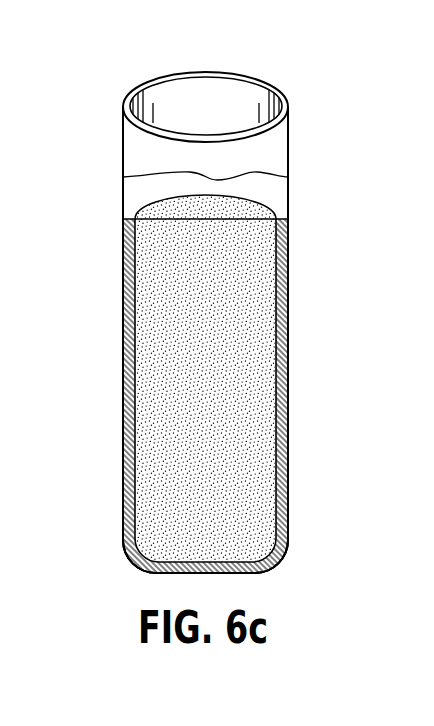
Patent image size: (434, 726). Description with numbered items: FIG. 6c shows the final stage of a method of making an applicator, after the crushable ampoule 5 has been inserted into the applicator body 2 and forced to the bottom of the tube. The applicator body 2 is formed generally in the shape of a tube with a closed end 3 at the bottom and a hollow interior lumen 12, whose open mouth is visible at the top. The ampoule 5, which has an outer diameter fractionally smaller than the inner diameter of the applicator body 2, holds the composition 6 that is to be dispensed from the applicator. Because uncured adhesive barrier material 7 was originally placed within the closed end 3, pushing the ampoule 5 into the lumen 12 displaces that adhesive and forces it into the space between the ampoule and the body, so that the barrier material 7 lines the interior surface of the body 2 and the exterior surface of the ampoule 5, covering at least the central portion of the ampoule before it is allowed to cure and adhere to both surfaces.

The applicator body 2 is at (278, 145).
The hollow interior lumen 12 is at (187, 87).
The barrier material 7 is at (128, 313).
The crushable ampoule 5 is at (246, 378).
The composition 6 is at (253, 322).
The closed end 3 is at (268, 563).